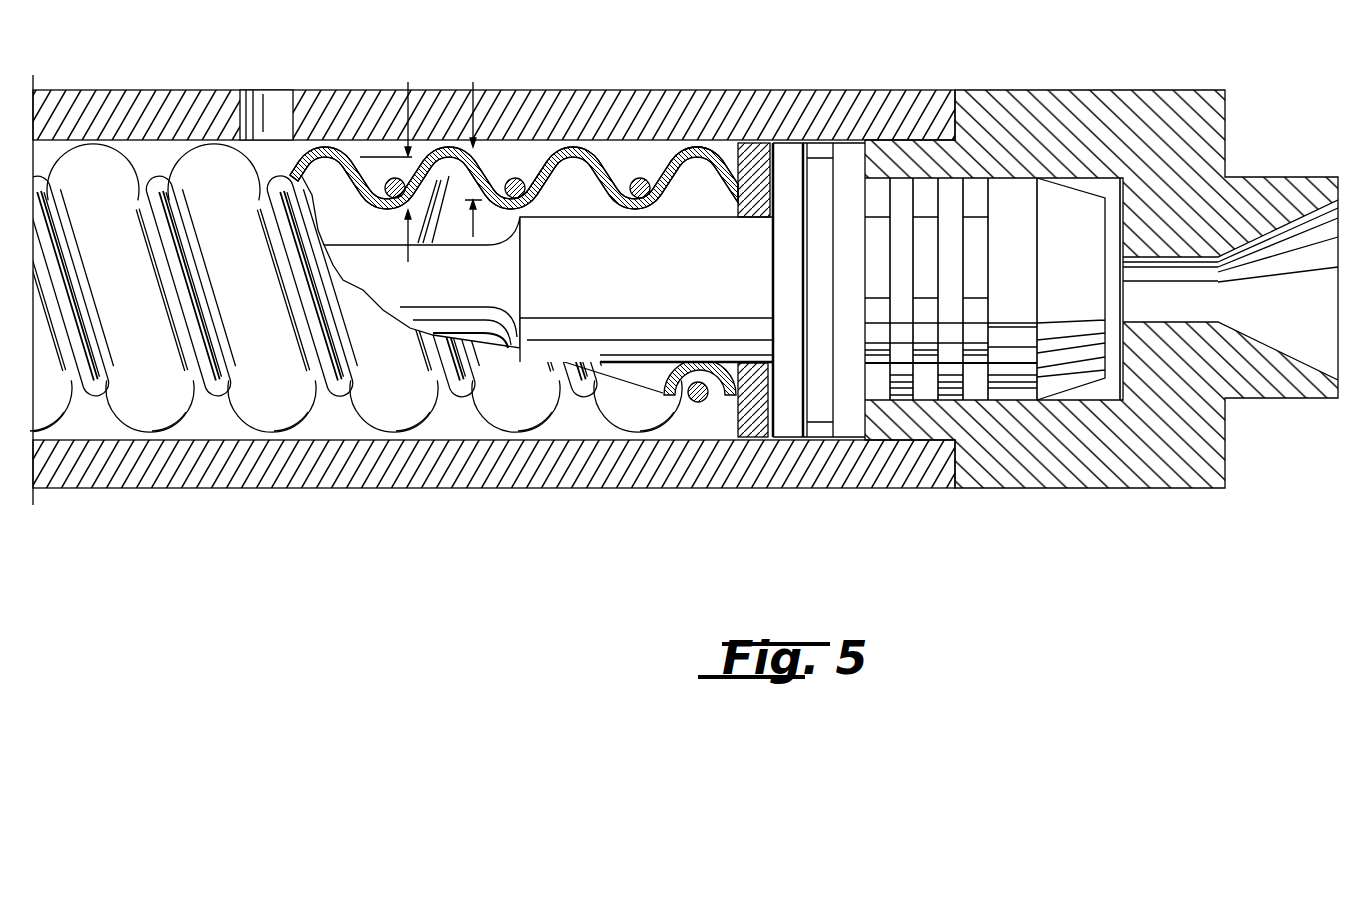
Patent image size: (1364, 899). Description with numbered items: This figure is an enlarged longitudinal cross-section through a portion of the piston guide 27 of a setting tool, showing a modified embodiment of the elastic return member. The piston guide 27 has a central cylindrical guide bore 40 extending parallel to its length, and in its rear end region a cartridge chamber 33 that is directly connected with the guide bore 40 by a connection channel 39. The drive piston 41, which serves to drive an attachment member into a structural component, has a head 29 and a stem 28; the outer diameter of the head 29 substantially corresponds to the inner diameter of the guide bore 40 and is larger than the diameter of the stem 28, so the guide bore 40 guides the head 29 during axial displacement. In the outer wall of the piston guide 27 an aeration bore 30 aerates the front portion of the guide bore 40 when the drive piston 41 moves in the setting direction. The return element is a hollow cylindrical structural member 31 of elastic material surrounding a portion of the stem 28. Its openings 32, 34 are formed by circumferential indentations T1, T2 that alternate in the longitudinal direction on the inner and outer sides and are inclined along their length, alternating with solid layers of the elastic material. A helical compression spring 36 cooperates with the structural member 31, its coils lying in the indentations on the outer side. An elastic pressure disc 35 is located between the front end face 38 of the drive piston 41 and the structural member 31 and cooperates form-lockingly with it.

The piston guide 27 is at (190, 103).
The stem 28 is at (423, 295).
The head 29 is at (848, 152).
The aeration bore 30 is at (270, 103).
The structural member 31 is at (158, 400).
The opening 32 is at (528, 163).
The cartridge chamber 33 is at (1318, 237).
The opening 34 is at (578, 163).
The pressure disc 35 is at (756, 150).
The helical compression spring 36 is at (343, 393).
The end face 38 is at (760, 412).
The connection channel 39 is at (1163, 317).
The guide bore 40 is at (668, 150).
The drive piston 41 is at (707, 215).
The circumferential indentation T1 is at (473, 82).
The circumferential indentation T2 is at (408, 82).